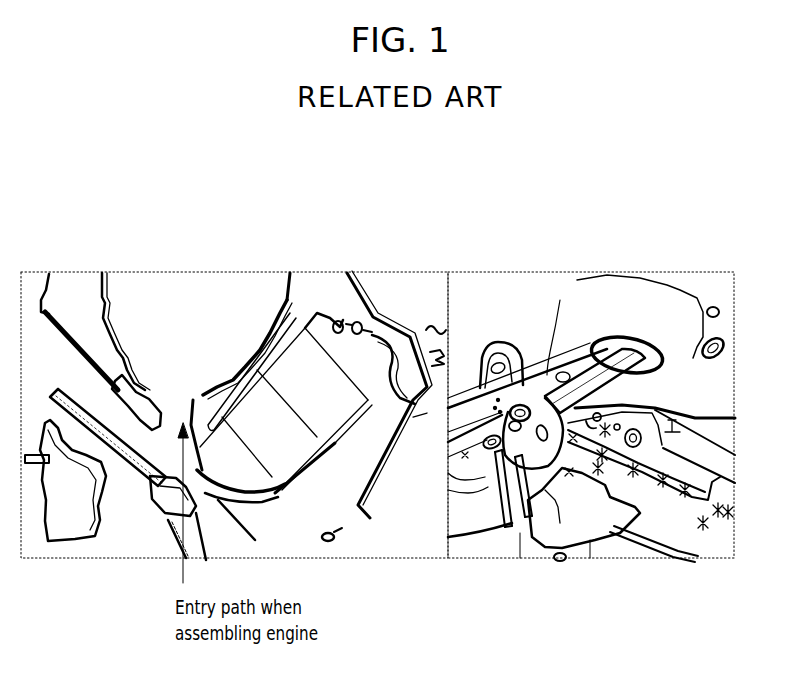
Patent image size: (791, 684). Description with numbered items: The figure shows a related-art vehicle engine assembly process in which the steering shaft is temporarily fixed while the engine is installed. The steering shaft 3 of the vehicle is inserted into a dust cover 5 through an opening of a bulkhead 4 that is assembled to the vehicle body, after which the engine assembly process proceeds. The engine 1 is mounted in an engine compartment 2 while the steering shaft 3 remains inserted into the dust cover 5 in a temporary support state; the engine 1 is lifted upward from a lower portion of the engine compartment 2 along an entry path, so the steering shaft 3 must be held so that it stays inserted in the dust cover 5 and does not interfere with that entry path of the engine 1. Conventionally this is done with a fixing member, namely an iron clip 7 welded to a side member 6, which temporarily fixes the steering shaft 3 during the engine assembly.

The engine 1 is at (307, 312).
The engine compartment 2 is at (270, 290).
The steering shaft 3 is at (152, 507).
The bulkhead 4 is at (113, 322).
The dust cover 5 is at (62, 327).
The side member 6 is at (588, 532).
The iron clip 7 is at (535, 535).